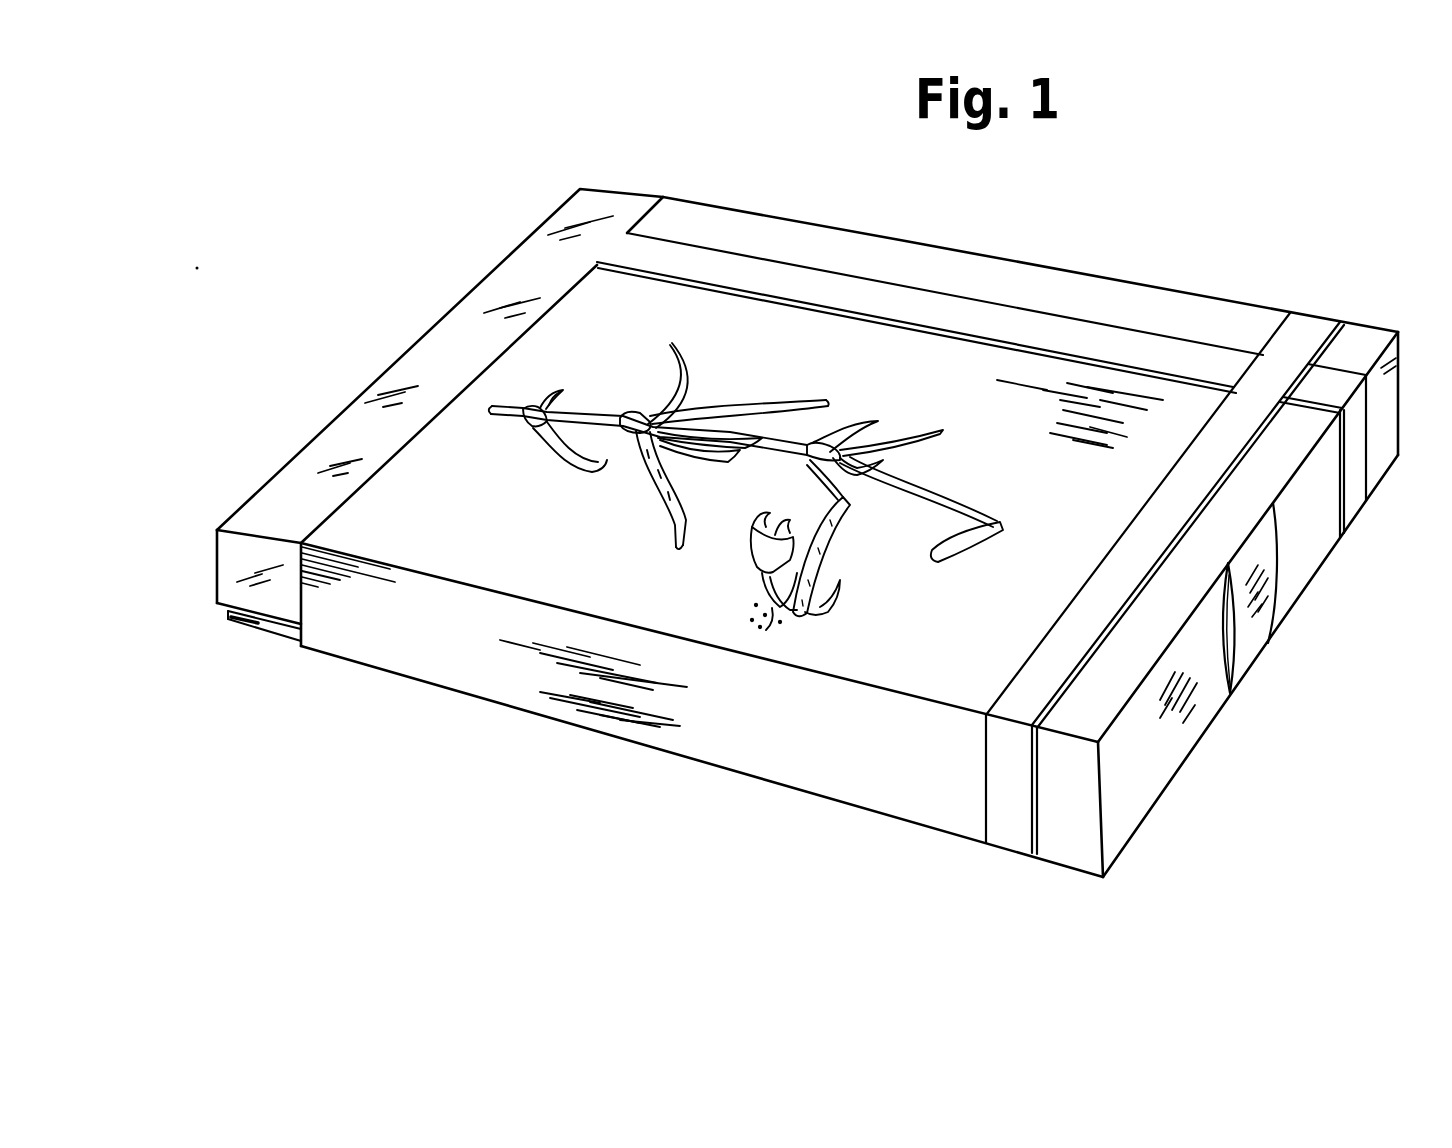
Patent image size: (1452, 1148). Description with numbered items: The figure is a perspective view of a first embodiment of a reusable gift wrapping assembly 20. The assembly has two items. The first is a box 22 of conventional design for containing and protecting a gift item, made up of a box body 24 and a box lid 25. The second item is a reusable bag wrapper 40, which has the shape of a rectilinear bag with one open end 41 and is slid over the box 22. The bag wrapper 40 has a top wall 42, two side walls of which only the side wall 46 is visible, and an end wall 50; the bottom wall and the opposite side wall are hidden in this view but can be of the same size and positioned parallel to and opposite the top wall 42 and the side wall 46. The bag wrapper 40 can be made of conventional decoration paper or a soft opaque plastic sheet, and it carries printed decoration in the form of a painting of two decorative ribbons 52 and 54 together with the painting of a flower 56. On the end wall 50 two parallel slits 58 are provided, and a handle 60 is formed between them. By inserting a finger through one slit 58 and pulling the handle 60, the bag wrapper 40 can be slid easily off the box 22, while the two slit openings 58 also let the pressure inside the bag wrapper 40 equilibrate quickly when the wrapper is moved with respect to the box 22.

The reusable gift wrapping assembly 20 is at (1192, 273).
The box 22 is at (333, 417).
The box body 24 is at (258, 633).
The box lid 25 is at (463, 320).
The reusable bag wrapper 40 is at (473, 686).
The open end 41 is at (300, 597).
The top wall 42 is at (885, 655).
The side wall 46 is at (840, 780).
The end wall 50 is at (1138, 802).
The decorative ribbon 52 is at (993, 797).
The decorative ribbon 54 is at (707, 262).
The flower 56 is at (650, 473).
The slits 58 is at (1273, 588).
The handle 60 is at (1250, 640).